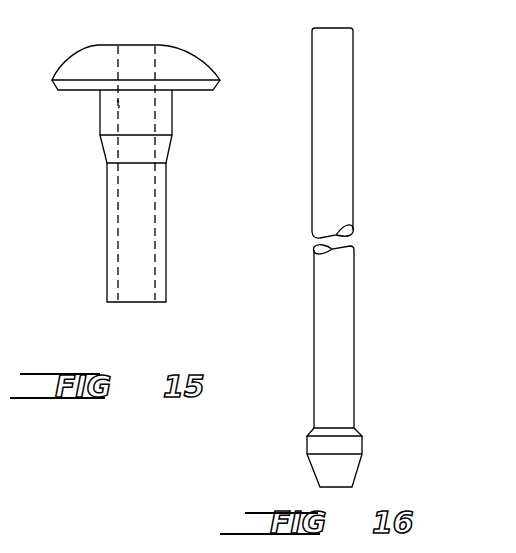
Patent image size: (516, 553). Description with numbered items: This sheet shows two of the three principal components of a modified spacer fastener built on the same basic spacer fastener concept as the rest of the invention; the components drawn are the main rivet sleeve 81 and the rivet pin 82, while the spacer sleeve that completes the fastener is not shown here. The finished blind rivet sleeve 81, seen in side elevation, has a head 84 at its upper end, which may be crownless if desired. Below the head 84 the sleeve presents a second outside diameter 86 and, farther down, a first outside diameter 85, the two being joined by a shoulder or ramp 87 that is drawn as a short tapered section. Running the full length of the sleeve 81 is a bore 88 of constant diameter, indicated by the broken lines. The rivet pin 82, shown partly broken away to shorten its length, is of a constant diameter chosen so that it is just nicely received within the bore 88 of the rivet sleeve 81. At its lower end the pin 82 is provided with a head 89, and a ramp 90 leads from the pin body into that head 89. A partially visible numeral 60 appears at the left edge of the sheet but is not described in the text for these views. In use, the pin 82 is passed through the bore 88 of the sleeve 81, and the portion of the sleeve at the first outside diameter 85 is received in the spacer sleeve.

In FIG. 15, the fastener assembly 60 is at (10, 212).
In FIG. 15, the main rivet sleeve 81 is at (121, 172).
In FIG. 16, the rivet pin 82 is at (318, 310).
In FIG. 15, the head 84 is at (78, 57).
In FIG. 15, the first outside diameter 85 is at (166, 244).
In FIG. 15, the second outside diameter 86 is at (172, 108).
In FIG. 15, the shoulder or ramp 87 is at (166, 148).
In FIG. 15, the bore 88 is at (118, 108).
In FIG. 16, the head 89 is at (307, 447).
In FIG. 16, the ramp 90 is at (362, 434).